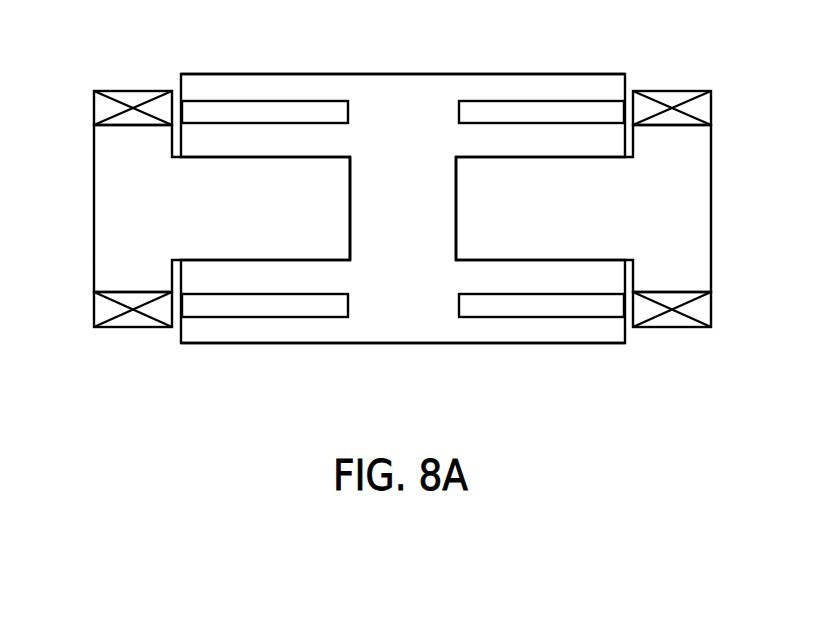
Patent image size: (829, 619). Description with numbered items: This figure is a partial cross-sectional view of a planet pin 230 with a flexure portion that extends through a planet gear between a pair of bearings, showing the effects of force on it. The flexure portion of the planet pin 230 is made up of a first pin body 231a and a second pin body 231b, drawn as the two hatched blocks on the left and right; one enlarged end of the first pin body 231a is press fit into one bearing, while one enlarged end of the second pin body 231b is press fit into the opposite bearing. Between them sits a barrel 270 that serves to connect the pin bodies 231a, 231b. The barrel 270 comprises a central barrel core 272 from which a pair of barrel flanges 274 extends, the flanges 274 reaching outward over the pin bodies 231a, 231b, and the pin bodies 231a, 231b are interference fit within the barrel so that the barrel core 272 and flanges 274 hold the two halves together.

The planet pin 230 is at (157, 177).
The first pin body 231a is at (243, 217).
The second pin body 231b is at (563, 220).
The barrel 270 is at (403, 214).
The barrel core 272 is at (383, 287).
The barrel flanges 274 is at (281, 87).